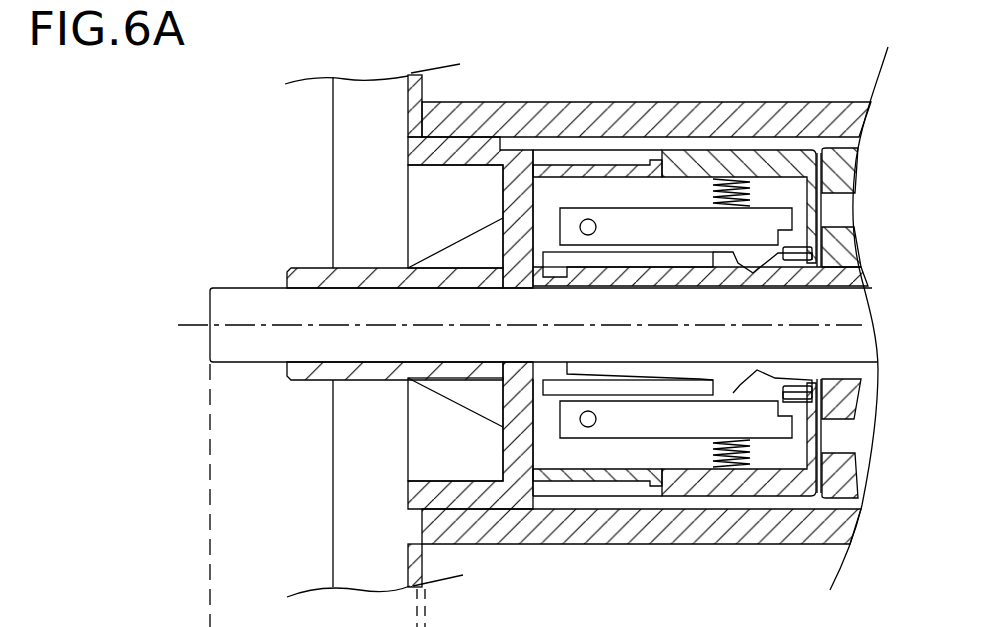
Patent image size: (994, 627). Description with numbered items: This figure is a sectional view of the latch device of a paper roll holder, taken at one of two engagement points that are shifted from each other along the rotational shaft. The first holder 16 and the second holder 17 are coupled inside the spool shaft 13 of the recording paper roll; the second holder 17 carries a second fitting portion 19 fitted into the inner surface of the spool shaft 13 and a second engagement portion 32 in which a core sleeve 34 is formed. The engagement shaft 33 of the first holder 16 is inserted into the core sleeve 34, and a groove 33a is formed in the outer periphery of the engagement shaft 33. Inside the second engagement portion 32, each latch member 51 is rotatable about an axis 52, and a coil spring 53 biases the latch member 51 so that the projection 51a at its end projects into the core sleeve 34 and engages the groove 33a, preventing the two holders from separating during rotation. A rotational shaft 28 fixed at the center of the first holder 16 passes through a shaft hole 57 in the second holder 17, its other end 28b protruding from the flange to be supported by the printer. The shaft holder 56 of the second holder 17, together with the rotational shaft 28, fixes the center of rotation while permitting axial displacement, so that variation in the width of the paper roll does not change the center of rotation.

The spool shaft 13 is at (640, 117).
The first holder 16 is at (829, 128).
The second holder 17 is at (311, 121).
The second fitting portion 19 is at (544, 128).
The rotational shaft 28 is at (185, 293).
The other end of the rotational shaft 28b is at (233, 288).
The second engagement portion 32 is at (722, 126).
The engagement shaft 33 is at (850, 265).
The groove 33a is at (757, 270).
The core sleeve 34 is at (803, 268).
The latch member 51 is at (620, 192).
The projection 51a is at (742, 250).
The axis 52 is at (580, 225).
The coil spring 53 is at (712, 190).
The shaft holder 56 is at (383, 270).
The shaft hole 57 is at (312, 358).